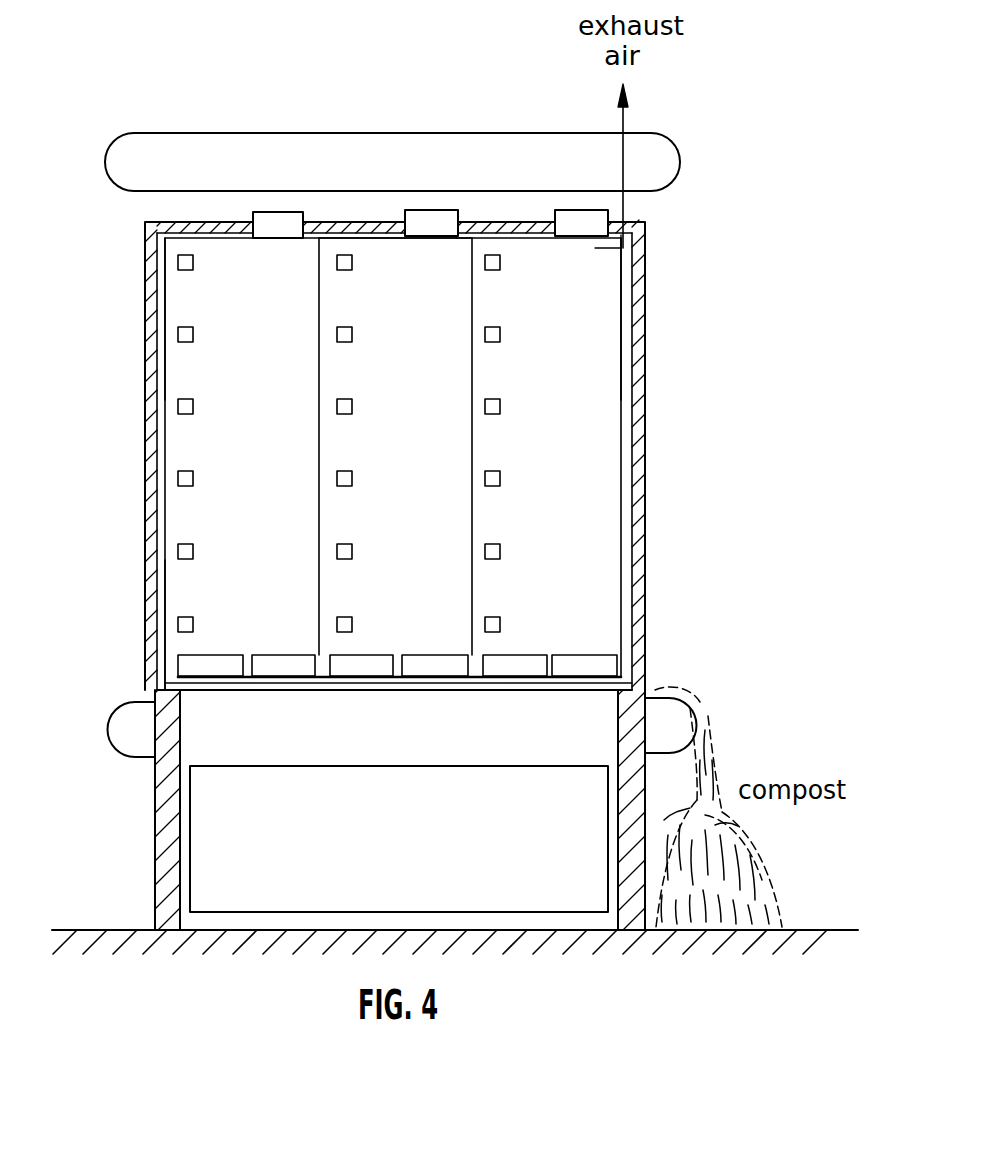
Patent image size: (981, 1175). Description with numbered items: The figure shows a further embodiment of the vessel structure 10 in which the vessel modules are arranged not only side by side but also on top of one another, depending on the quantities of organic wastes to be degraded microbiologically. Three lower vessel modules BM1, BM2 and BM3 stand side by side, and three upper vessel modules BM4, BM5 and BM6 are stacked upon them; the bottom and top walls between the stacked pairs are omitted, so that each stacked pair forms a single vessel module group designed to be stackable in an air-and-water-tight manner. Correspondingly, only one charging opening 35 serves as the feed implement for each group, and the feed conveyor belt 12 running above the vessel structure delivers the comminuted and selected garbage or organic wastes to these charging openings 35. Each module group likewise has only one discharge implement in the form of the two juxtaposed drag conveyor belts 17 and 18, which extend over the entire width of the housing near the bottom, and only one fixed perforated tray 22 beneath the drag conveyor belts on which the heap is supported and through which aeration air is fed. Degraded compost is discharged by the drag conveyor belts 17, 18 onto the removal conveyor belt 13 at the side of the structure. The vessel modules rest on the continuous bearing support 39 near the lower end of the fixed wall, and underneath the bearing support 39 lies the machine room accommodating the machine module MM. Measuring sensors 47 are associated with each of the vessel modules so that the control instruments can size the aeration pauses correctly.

The vessel structure 10 is at (87, 382).
The conveyor belt 12 is at (136, 148).
The conveyor belt 13 is at (114, 729).
The drag conveyor belt 17 is at (295, 668).
The drag conveyor belt 18 is at (237, 668).
The perforated tray 22 is at (246, 655).
The charging opening 35 is at (276, 222).
The bearing support 39 is at (171, 697).
The measuring sensors 47 is at (182, 406).
The vessel module BM1 is at (193, 583).
The vessel module BM2 is at (372, 446).
The vessel module BM3 is at (597, 528).
The vessel module BM4 is at (118, 319).
The vessel module BM5 is at (373, 262).
The vessel module BM6 is at (592, 303).
The machine module MM is at (399, 839).